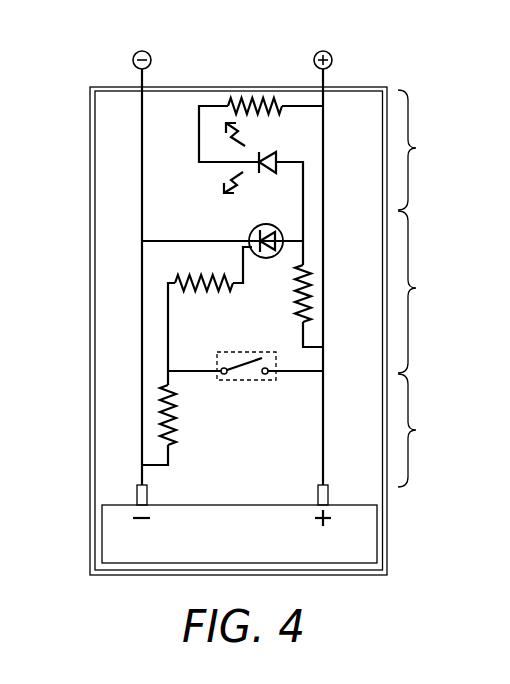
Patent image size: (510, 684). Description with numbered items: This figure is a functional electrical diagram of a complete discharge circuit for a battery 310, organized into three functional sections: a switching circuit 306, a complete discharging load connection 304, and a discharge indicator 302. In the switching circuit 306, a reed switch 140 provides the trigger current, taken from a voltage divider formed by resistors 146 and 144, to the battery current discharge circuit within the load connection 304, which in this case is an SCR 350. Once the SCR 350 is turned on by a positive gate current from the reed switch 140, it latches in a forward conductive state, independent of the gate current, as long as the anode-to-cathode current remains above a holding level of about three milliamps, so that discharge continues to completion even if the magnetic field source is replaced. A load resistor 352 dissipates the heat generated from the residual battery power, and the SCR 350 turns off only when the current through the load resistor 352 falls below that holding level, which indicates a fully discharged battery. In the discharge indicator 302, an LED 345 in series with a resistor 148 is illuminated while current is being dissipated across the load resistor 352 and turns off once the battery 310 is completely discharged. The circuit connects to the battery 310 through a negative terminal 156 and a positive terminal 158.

The reed switch 140 is at (247, 381).
The resistor 144 is at (200, 277).
The resistor 146 is at (170, 418).
The resistor 148 is at (258, 100).
The negative terminal 156 is at (133, 57).
The positive terminal 158 is at (332, 57).
The discharge indicator 302 is at (414, 148).
The complete discharging load connection 304 is at (414, 288).
The switching circuit 306 is at (414, 430).
The battery 310 is at (377, 531).
The light emitting diode 345 is at (240, 152).
The SCR 350 is at (255, 229).
The load resistor 352 is at (303, 305).